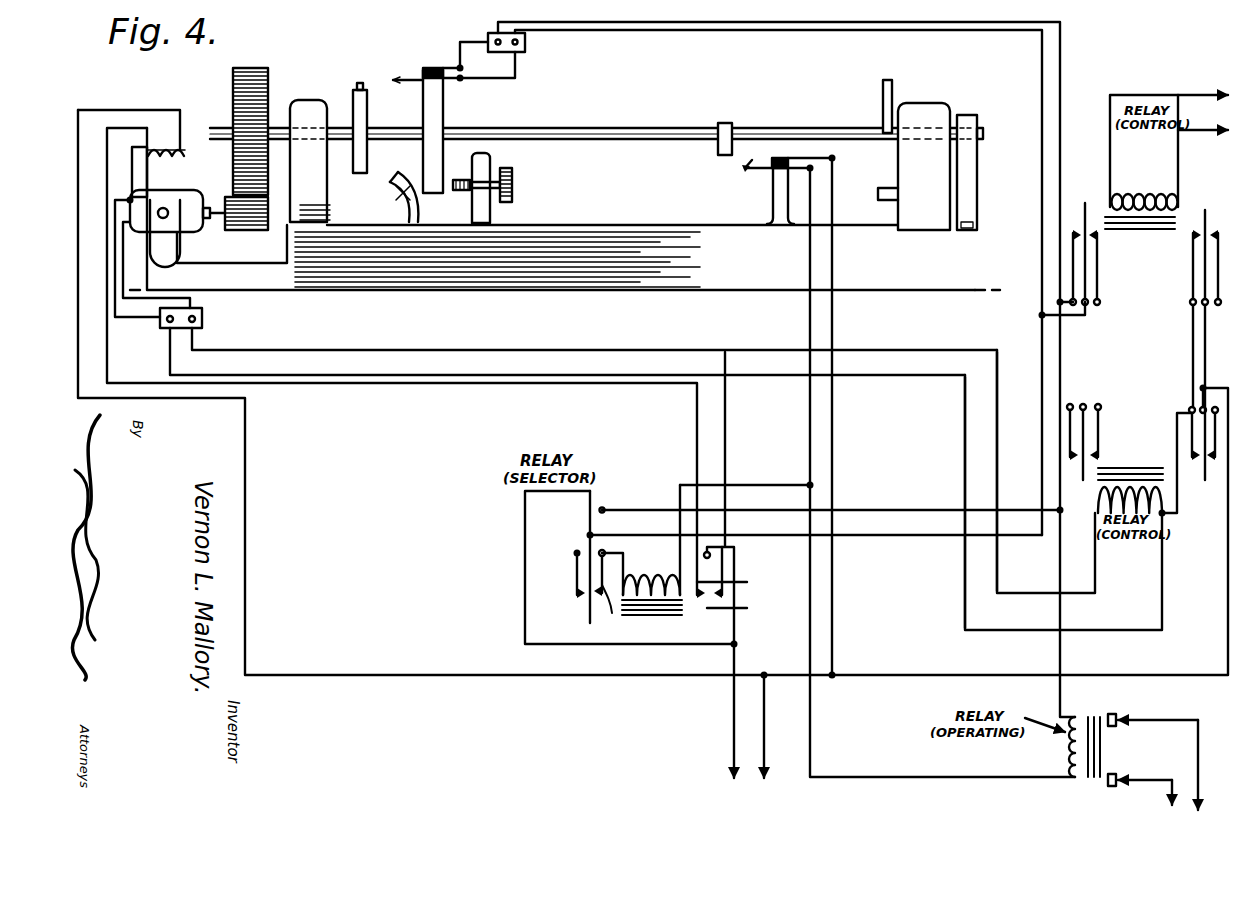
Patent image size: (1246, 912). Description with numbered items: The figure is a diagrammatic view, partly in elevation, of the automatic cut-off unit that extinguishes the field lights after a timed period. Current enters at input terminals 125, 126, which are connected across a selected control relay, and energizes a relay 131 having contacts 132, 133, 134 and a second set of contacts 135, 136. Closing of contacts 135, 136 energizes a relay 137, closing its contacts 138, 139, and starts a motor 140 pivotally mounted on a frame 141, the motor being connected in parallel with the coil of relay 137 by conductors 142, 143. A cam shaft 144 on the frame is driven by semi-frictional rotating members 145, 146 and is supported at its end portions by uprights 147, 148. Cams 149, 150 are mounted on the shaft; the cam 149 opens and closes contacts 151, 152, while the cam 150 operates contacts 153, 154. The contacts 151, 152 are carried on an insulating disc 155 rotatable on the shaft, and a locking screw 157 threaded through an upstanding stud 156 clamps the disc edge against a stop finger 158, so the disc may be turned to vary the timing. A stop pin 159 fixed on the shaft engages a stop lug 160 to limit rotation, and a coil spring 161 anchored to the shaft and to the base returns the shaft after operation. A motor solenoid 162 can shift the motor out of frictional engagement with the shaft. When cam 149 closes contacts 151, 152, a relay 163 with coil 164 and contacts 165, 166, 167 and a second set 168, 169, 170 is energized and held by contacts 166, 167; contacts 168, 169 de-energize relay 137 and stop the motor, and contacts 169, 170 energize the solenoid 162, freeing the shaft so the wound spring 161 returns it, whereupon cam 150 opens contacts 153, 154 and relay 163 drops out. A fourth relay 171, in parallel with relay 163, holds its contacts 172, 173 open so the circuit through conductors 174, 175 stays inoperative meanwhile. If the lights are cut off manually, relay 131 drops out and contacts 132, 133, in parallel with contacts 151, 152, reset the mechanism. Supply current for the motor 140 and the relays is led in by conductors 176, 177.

The input terminal 125 is at (1190, 94).
The input terminal 126 is at (1198, 123).
The relay 131 is at (1138, 193).
The contact 132 is at (1073, 270).
The contact 133 is at (1085, 290).
The contact 134 is at (1097, 255).
The contact 135 is at (1193, 274).
The contact 136 is at (1205, 290).
The relay 137 is at (1131, 466).
The contact 138 is at (1185, 414).
The contact 139 is at (1200, 388).
The motor 140 is at (180, 195).
The frame 141 is at (428, 290).
The conductor 142 is at (997, 418).
The conductor 143 is at (965, 462).
The cam shaft 144 is at (628, 143).
The semi-frictional rotating member 145 is at (262, 100).
The semi-frictional rotating member 146 is at (250, 228).
The upright 147 is at (318, 192).
The upright 148 is at (924, 166).
The cam 149 is at (367, 104).
The cam 150 is at (732, 128).
The contact 151 is at (410, 64).
The contact 152 is at (400, 78).
The contact 153 is at (742, 172).
The contact 154 is at (762, 172).
The disc 155 is at (443, 110).
The upstanding stud 156 is at (488, 160).
The locking screw 157 is at (512, 185).
The stop finger 158 is at (405, 193).
The stop pin 159 is at (892, 90).
The stop lug 160 is at (880, 200).
The coil spring 161 is at (977, 188).
The motor solenoid 162 is at (170, 150).
The relay 163 is at (644, 580).
The coil 164 is at (660, 608).
The contact 165 is at (577, 580).
The contact 166 is at (590, 608).
The contact 167 is at (616, 595).
The contact 168 is at (738, 562).
The contact 169 is at (745, 582).
The contact 170 is at (742, 584).
The fourth relay 171 is at (1068, 745).
The contact 172 is at (1118, 726).
The contact 173 is at (1118, 776).
The conductor 174 is at (1176, 715).
The conductor 175 is at (1140, 783).
The conductor 176 is at (732, 723).
The conductor 177 is at (764, 737).